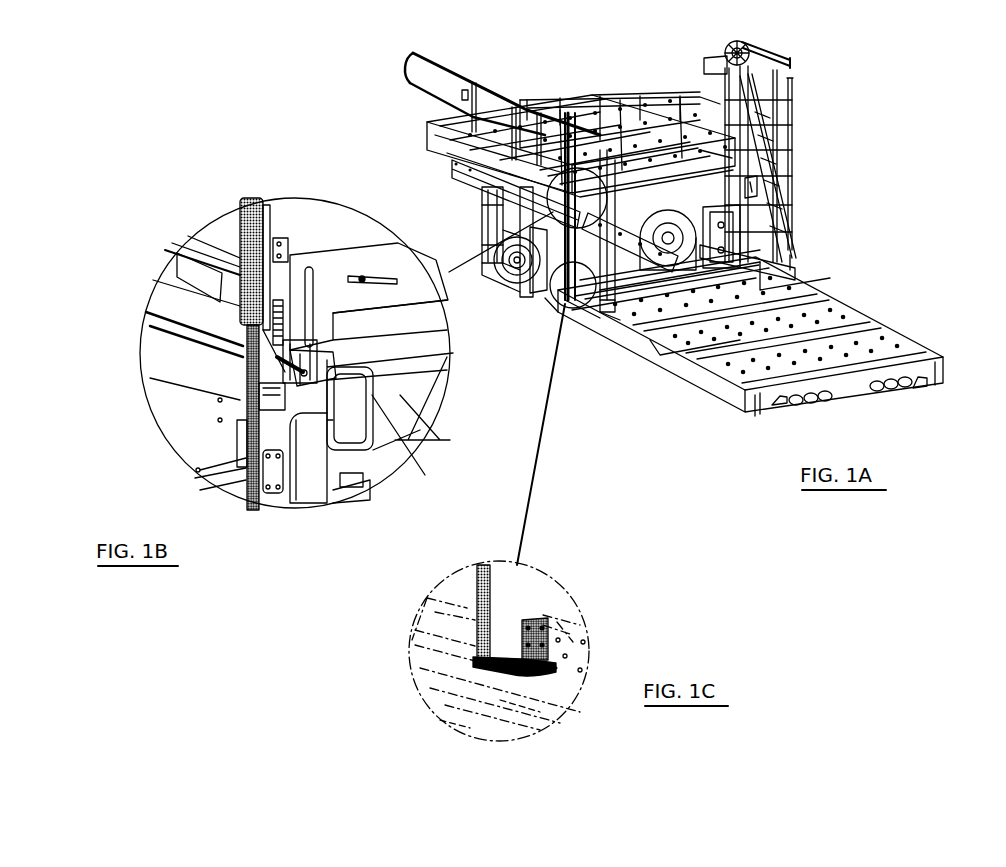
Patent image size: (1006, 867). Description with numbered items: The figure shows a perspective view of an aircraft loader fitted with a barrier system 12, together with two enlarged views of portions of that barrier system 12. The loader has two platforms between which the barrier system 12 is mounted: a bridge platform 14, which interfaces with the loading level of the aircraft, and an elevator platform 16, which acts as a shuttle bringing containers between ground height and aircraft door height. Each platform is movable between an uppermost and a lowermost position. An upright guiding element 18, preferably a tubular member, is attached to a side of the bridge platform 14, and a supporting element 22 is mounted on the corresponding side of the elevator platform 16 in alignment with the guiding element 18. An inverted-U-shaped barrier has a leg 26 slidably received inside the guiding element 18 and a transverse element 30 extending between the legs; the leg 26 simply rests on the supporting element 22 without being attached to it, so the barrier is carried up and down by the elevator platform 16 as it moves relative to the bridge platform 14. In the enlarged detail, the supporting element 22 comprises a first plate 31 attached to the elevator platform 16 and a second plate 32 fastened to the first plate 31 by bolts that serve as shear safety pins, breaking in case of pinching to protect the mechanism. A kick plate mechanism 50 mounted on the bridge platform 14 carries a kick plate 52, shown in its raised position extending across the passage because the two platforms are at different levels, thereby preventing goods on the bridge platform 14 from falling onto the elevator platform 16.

In FIG. 1A, the barrier system 12 is at (670, 88).
In FIG. 1A, the bridge platform 14 is at (590, 100).
In FIG. 1A, the elevator platform 16 is at (862, 348).
In FIG. 1B, the first upright guiding element 18 is at (250, 215).
In FIG. 1C, the supporting element 22 is at (553, 665).
In FIG. 1B, the first leg 26 is at (262, 383).
In FIG. 1C, the first leg 26 is at (487, 568).
In FIG. 1C, the transverse element 30 is at (535, 628).
In FIG. 1C, the first plate 31 is at (533, 675).
In FIG. 1C, the second plate 32 is at (500, 678).
In FIG. 1A, the kick plate mechanism 50 is at (756, 184).
In FIG. 1B, the kick plate mechanism 50 is at (388, 252).
In FIG. 1B, the kick plate 52 is at (340, 258).